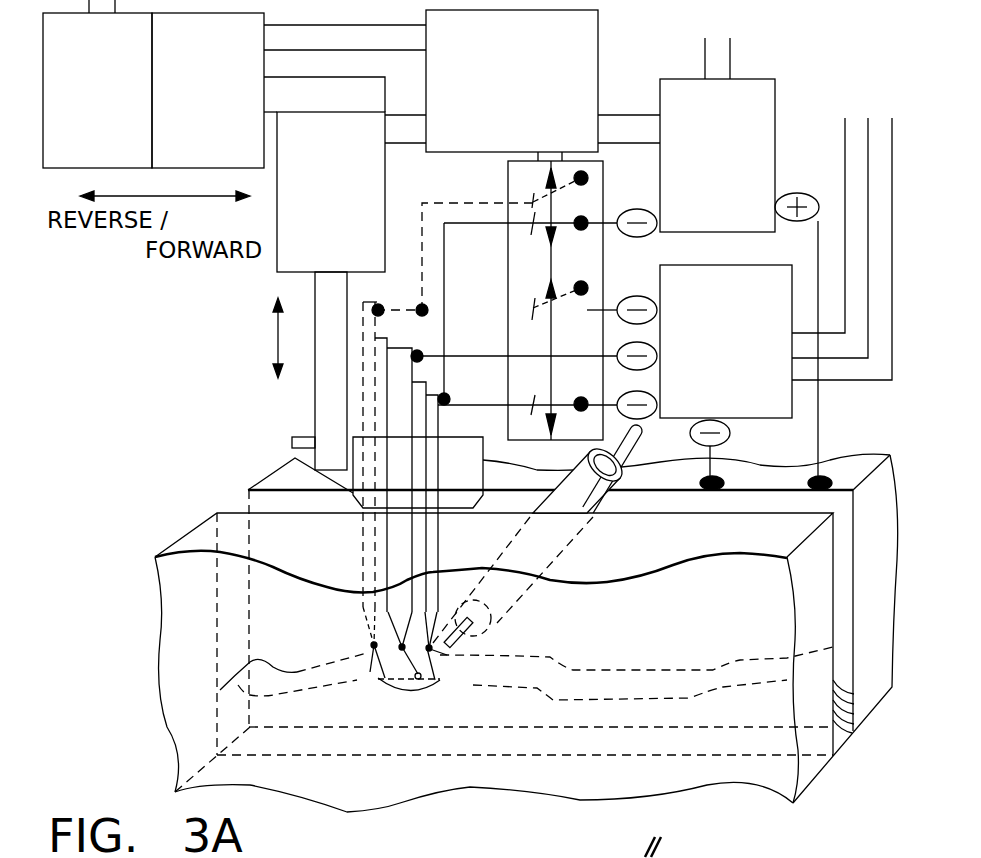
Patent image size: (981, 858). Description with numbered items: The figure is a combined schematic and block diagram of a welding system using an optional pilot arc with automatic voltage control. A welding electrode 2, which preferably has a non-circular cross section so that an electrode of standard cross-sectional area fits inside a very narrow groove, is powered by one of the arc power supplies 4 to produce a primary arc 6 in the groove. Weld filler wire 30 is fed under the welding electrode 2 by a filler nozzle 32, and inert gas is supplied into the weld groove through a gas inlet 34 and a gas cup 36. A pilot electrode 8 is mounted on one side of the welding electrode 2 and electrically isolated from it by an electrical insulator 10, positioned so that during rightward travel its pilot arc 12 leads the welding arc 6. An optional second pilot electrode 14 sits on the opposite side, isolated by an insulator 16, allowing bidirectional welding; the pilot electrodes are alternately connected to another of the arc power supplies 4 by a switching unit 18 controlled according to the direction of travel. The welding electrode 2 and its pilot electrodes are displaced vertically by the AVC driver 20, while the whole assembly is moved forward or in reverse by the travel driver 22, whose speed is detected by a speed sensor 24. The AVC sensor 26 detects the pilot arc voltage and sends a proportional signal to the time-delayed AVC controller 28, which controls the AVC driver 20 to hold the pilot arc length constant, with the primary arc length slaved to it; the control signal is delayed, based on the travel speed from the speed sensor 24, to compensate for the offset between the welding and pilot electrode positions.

The welding electrode 2 is at (397, 592).
The arc power supplies 4 is at (752, 420).
The primary arc 6 is at (370, 663).
The pilot electrode 8 is at (425, 557).
The electrical insulator 10 is at (437, 528).
The pilot arc 12 is at (468, 693).
The second pilot electrode 14 is at (370, 562).
The insulator 16 is at (385, 543).
The switching unit 18 is at (603, 245).
The AVC driver 20 is at (317, 245).
The travel driver 22 is at (81, 147).
The speed sensor 24 is at (193, 147).
The AVC sensor 26 is at (702, 210).
The time-delayed AVC controller 28 is at (598, 52).
The weld filler wire 30 is at (465, 690).
The filler nozzle 32 is at (607, 508).
The gas inlet 34 is at (297, 435).
The gas cup 36 is at (448, 433).